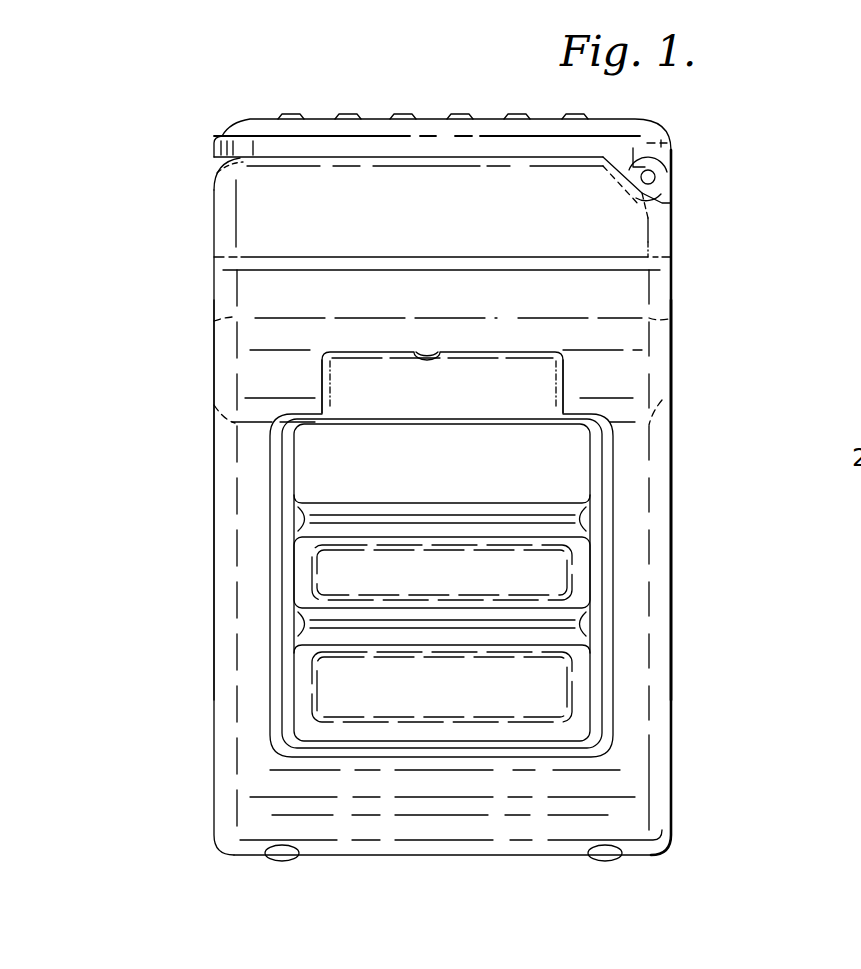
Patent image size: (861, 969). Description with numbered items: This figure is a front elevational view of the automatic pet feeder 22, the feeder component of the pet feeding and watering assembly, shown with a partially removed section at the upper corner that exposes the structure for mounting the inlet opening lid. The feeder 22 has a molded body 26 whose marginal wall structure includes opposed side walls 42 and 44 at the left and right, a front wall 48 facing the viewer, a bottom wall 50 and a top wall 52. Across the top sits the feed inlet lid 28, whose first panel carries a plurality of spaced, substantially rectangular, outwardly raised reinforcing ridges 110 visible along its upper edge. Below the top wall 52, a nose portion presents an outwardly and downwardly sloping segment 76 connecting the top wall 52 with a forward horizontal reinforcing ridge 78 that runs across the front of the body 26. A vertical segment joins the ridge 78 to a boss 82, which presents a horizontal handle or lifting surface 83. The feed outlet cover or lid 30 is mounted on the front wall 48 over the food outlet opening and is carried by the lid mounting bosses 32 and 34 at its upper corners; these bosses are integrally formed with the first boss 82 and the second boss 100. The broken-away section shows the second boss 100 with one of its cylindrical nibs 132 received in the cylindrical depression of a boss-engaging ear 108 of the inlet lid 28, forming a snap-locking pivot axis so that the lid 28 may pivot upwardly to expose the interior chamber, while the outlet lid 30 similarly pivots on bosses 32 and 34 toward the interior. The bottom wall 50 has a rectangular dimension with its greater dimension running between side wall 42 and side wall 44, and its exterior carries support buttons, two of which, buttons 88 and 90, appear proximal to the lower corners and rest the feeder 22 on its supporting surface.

The automatic pet feeder 22 is at (703, 683).
The molded body 26 is at (660, 297).
The feed inlet lid 28 is at (327, 124).
The feed outlet lid 30 is at (573, 480).
The lid mounting boss 32 is at (322, 378).
The lid mounting boss 34 is at (564, 378).
The side wall 42 is at (673, 463).
The side wall 44 is at (226, 600).
The front wall 48 is at (480, 289).
The bottom wall 50 is at (410, 857).
The top wall 52 is at (490, 157).
The outwardly and downwardly sloping segment 76 is at (245, 212).
The forward horizontal reinforcing ridge 78 is at (277, 263).
The boss 82 is at (493, 350).
The horizontal handle or lifting surface 83 is at (430, 356).
The support button 88 is at (603, 854).
The support button 90 is at (276, 854).
The second boss 100 is at (631, 186).
The boss-engaging ear 108 is at (641, 145).
The reinforcing ridges 110 is at (403, 116).
The cylindrical nib 132 is at (657, 178).